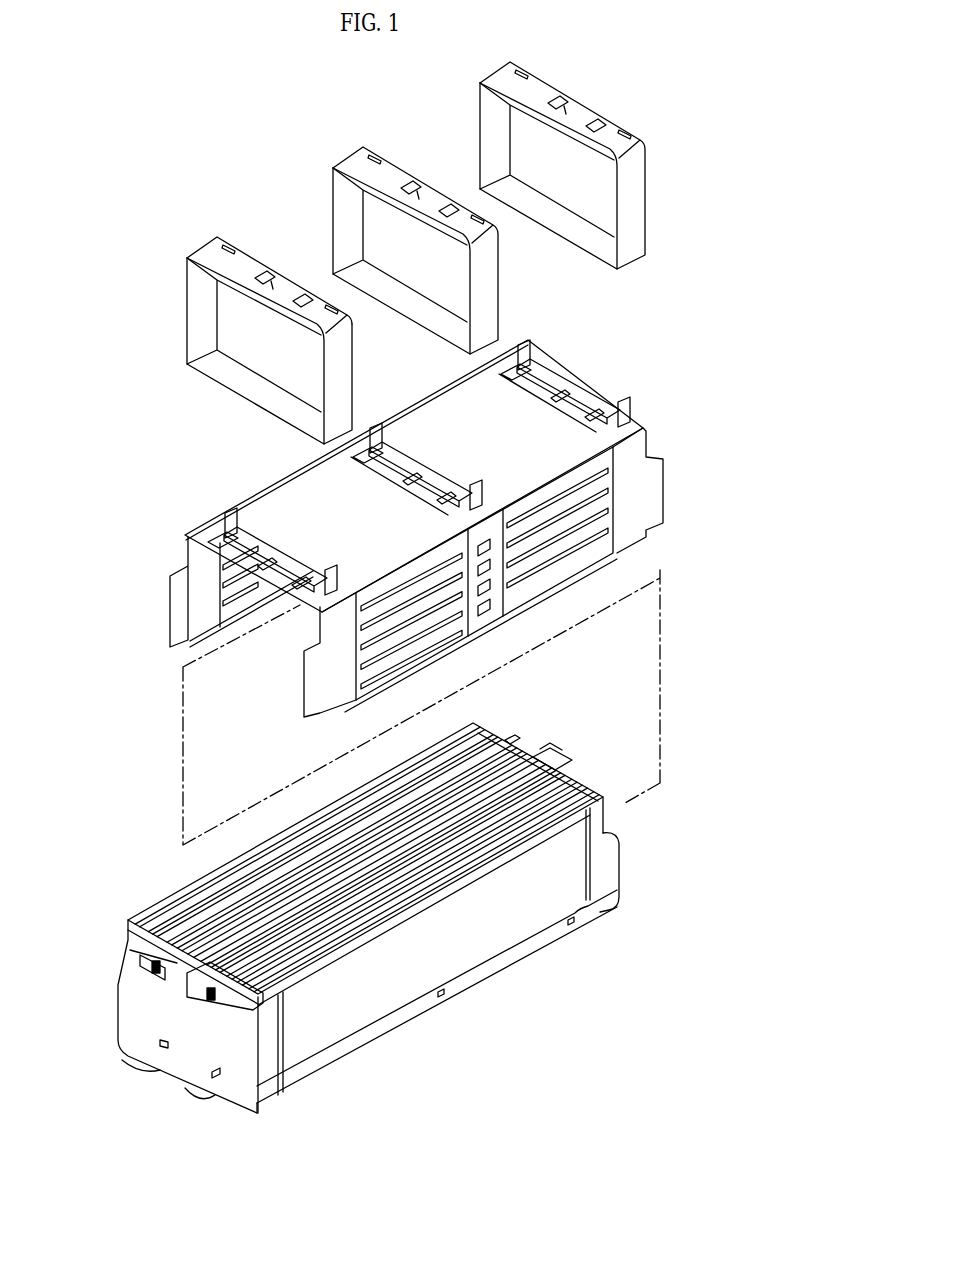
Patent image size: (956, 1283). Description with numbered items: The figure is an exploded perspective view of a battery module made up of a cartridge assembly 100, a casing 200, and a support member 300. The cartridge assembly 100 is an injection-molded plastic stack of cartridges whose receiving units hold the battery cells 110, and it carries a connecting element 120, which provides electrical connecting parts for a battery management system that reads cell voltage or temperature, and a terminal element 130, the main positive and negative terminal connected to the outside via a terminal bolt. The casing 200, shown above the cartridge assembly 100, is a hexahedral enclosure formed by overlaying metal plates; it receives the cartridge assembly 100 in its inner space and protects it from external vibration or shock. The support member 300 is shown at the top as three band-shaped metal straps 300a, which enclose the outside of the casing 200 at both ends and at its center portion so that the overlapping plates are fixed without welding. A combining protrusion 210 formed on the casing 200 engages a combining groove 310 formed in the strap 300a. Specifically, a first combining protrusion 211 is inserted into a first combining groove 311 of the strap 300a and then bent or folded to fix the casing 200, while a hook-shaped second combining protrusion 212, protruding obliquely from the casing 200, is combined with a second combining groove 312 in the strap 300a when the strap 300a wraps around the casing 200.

The cartridge assembly 100 is at (122, 878).
The battery cell 110 is at (258, 862).
The connecting element 120 is at (548, 750).
The terminal element 130 is at (150, 963).
The casing 200 is at (385, 662).
The combining protrusion 210 is at (217, 499).
The first combining protrusion 211 is at (228, 525).
The second combining protrusion 212 is at (303, 578).
The support member 300 is at (180, 181).
The strap 300a is at (198, 249).
The combining groove 310 is at (301, 247).
The first combining groove 311 is at (318, 278).
The second combining groove 312 is at (284, 265).